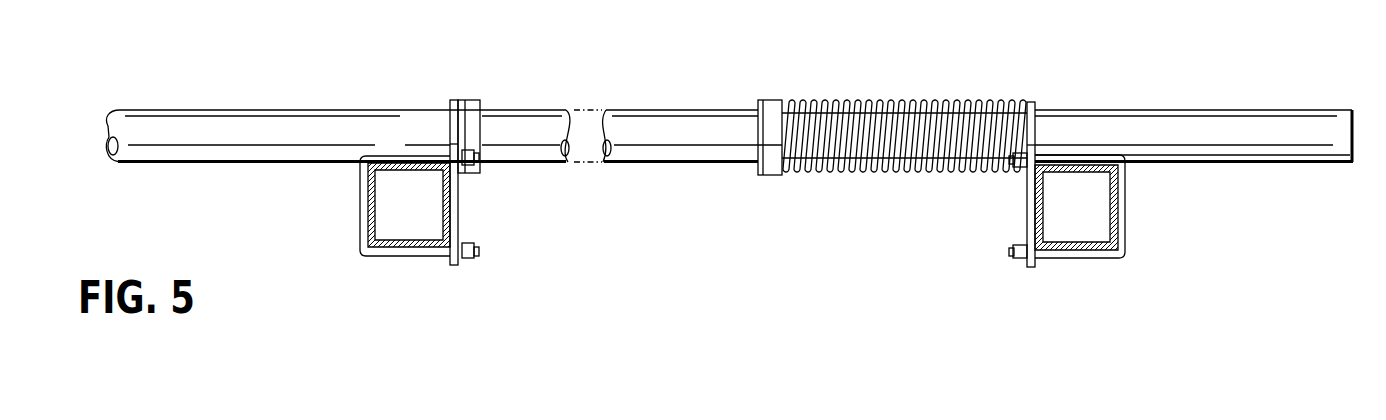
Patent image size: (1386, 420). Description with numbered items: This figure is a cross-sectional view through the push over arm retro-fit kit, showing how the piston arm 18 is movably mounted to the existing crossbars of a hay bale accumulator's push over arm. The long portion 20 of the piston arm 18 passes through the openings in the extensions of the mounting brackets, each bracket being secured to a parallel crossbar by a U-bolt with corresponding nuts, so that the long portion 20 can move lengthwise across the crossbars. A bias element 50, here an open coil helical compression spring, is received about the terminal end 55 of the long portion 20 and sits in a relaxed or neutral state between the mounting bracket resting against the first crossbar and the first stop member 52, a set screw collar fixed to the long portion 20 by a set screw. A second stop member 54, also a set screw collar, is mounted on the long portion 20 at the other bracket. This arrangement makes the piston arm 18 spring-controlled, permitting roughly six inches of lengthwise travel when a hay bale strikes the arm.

The piston arm 18 is at (738, 100).
The long portion 20 is at (628, 110).
The bias element 50 is at (917, 100).
The first stop member 52 is at (770, 100).
The second stop member 54 is at (476, 100).
The terminal end 55 is at (1291, 110).